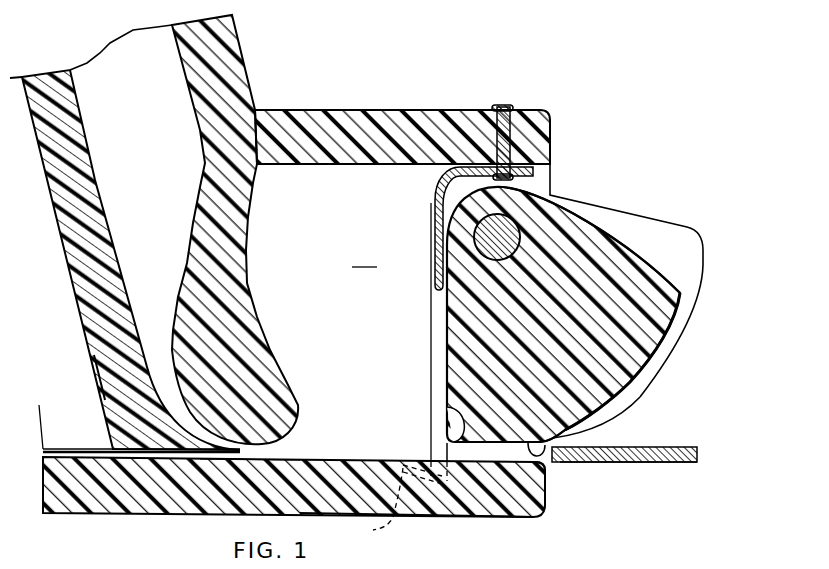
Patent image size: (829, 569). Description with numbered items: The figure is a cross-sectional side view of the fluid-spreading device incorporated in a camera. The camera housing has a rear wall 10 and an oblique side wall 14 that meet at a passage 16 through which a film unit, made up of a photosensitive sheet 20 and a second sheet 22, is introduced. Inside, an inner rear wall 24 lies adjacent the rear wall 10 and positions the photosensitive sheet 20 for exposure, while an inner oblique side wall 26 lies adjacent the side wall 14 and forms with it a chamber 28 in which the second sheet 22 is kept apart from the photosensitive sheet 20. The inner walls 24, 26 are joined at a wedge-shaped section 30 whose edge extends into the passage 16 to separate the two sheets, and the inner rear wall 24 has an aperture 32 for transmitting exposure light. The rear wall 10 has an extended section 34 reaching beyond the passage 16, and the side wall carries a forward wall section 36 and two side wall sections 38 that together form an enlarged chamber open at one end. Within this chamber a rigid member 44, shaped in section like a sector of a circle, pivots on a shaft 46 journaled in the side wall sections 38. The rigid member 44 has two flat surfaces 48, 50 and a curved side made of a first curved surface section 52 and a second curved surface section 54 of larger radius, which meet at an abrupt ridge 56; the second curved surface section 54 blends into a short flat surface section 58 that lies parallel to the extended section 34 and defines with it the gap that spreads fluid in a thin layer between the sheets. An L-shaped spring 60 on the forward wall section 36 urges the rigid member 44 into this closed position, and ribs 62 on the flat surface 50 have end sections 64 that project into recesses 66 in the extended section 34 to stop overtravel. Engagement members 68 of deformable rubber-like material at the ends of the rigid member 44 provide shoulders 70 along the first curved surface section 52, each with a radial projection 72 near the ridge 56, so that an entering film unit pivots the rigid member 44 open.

The rear wall 10 is at (73, 505).
The oblique side wall 14 is at (237, 44).
The passage 16 is at (263, 447).
The photosensitive sheet 20 is at (666, 464).
The second sheet 22 is at (677, 447).
The inner rear wall 24 is at (87, 445).
The inner oblique side wall 26 is at (88, 182).
The chamber 28 is at (144, 109).
The wedge-shaped section 30 is at (205, 450).
The aperture 32 is at (100, 378).
The extended section 34 is at (443, 512).
The forward wall section 36 is at (392, 110).
The side wall sections 38 is at (364, 258).
The rigid member 44 is at (634, 253).
The shaft 46 is at (513, 227).
The flat surface 48 is at (590, 235).
The flat surface 50 is at (443, 343).
The first curved surface section 52 is at (630, 387).
The second curved surface section 54 is at (510, 445).
The ridge 56 is at (570, 427).
The flat surface section 58 is at (462, 412).
The L-shaped spring 60 is at (436, 192).
The ribs 62 is at (430, 323).
The end sections 64 is at (428, 450).
The recesses 66 is at (393, 504).
The engagement members 68 is at (709, 265).
The shoulders 70 is at (673, 348).
The radial projection 72 is at (543, 471).